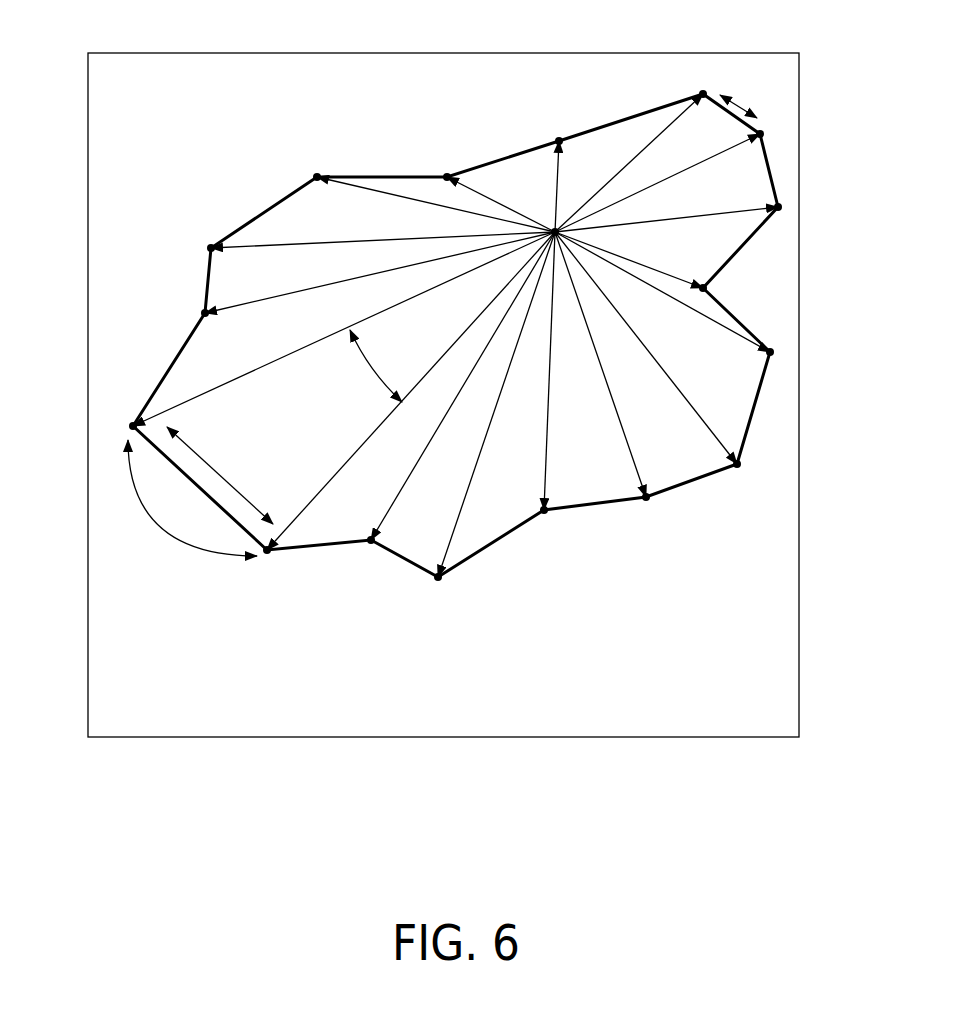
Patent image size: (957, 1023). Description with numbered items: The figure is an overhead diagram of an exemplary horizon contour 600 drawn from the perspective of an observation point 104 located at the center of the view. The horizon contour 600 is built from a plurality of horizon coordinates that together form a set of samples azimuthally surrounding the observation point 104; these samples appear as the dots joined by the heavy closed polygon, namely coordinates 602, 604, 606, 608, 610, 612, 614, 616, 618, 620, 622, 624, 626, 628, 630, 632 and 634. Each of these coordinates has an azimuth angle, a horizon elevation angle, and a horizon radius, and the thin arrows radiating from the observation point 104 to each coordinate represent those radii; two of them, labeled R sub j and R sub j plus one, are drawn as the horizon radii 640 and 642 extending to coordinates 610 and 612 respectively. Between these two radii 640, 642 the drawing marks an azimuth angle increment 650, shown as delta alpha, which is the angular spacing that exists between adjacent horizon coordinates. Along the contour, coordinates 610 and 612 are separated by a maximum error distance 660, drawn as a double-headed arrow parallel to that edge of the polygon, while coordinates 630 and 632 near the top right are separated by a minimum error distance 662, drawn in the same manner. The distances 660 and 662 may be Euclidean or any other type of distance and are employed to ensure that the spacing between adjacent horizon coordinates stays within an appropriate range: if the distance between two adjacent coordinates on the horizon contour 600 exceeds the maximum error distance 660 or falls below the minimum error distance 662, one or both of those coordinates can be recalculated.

The horizon contour 600 is at (740, 525).
The observation point 104 is at (552, 228).
The horizon coordinate 610 is at (128, 422).
The horizon coordinate 608 is at (205, 310).
The horizon coordinate 606 is at (211, 245).
The horizon coordinate 604 is at (317, 174).
The horizon coordinate 602 is at (447, 174).
The horizon coordinate 634 is at (559, 138).
The horizon coordinate 632 is at (699, 91).
The horizon coordinate 630 is at (763, 133).
The horizon coordinate 628 is at (781, 209).
The horizon coordinate 626 is at (707, 289).
The horizon coordinate 624 is at (773, 354).
The horizon coordinate 622 is at (740, 466).
The horizon coordinate 620 is at (647, 500).
The horizon coordinate 618 is at (545, 513).
The horizon coordinate 616 is at (438, 580).
The horizon coordinate 614 is at (371, 543).
The horizon coordinate 612 is at (272, 553).
The radius vector Rj 640 is at (218, 385).
The radius vector Rj+1 642 is at (378, 427).
The azimuth angle increment 650 is at (380, 387).
The maximum error distance 660 is at (193, 447).
The minimum error distance 662 is at (740, 105).